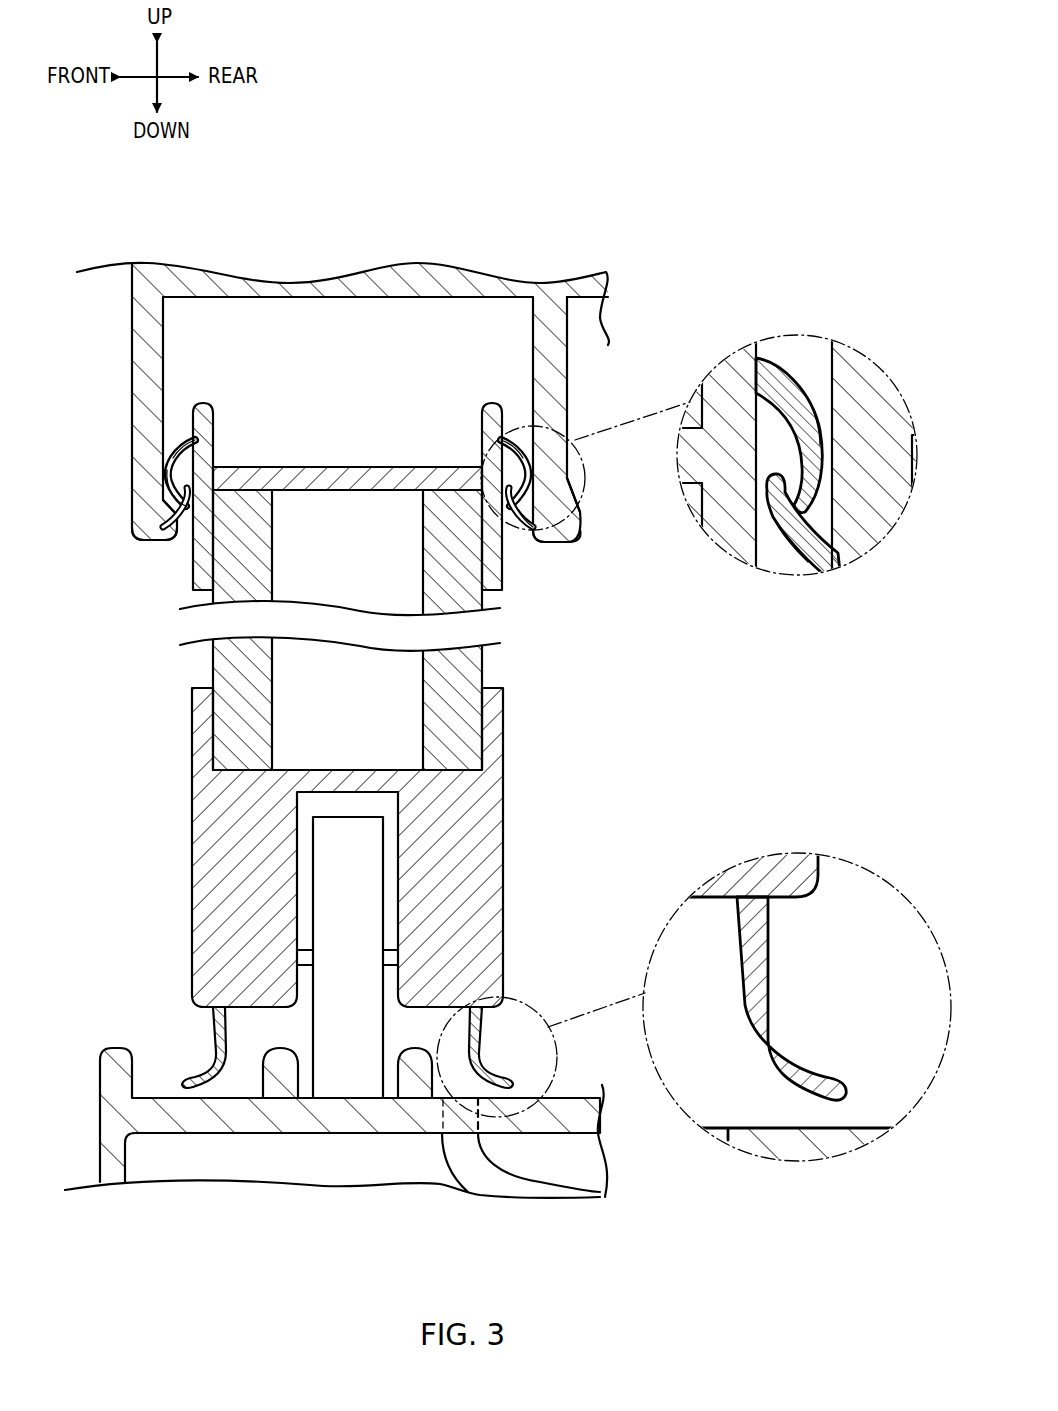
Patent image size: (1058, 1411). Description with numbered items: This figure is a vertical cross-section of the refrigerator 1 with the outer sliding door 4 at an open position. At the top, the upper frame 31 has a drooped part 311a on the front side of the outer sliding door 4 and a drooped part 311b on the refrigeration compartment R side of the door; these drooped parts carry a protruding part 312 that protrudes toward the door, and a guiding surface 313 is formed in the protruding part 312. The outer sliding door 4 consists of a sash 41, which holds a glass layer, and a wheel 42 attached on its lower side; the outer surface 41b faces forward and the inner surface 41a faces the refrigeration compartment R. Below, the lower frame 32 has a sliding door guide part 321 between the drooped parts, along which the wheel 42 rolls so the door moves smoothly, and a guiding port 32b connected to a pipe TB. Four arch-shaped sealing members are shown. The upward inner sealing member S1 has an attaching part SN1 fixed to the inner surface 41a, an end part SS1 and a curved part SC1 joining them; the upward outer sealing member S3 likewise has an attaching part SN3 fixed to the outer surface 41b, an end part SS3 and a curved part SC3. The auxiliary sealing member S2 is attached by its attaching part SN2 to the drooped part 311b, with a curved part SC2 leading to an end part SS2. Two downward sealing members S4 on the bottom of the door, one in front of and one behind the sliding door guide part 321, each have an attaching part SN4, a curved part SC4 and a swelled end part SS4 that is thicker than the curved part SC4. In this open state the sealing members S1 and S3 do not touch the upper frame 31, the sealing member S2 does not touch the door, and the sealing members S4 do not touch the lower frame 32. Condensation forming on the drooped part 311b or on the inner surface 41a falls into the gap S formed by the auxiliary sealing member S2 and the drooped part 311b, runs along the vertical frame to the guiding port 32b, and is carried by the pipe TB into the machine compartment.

The refrigerator 1 is at (566, 196).
The upper frame 31 is at (606, 362).
The drooped part 311a is at (132, 385).
The drooped part 311b is at (567, 395).
The protruding part 312 is at (165, 542).
The guiding surface 313 is at (215, 458).
The outer sliding door 4 is at (576, 903).
The sash 41 is at (440, 466).
The inner surface 41a is at (503, 588).
The outer surface 41b is at (193, 580).
The wheel 42 is at (337, 1075).
The lower frame 32 is at (578, 1079).
The sliding door guide part 321 is at (265, 1087).
The guiding port 32b is at (443, 1100).
The pipe TB is at (458, 1178).
The refrigeration compartment R is at (641, 847).
The gap S is at (532, 502).
The upward inner sealing member S1 is at (512, 448).
The auxiliary sealing member S2 is at (517, 528).
The upward outer sealing member S3 is at (168, 470).
The downward sealing member S4 is at (214, 1020).
The attaching part SN1 is at (760, 356).
The curved part SC1 is at (802, 402).
The end part SS1 is at (826, 512).
The attaching part SN2 is at (814, 552).
The curved part SC2 is at (776, 525).
The end part SS2 is at (752, 492).
The attaching part SN3 is at (184, 440).
The curved part SC3 is at (171, 478).
The end part SS3 is at (176, 506).
The attaching part SN4 is at (770, 925).
The curved part SC4 is at (762, 1043).
The end part SS4 is at (848, 1088).